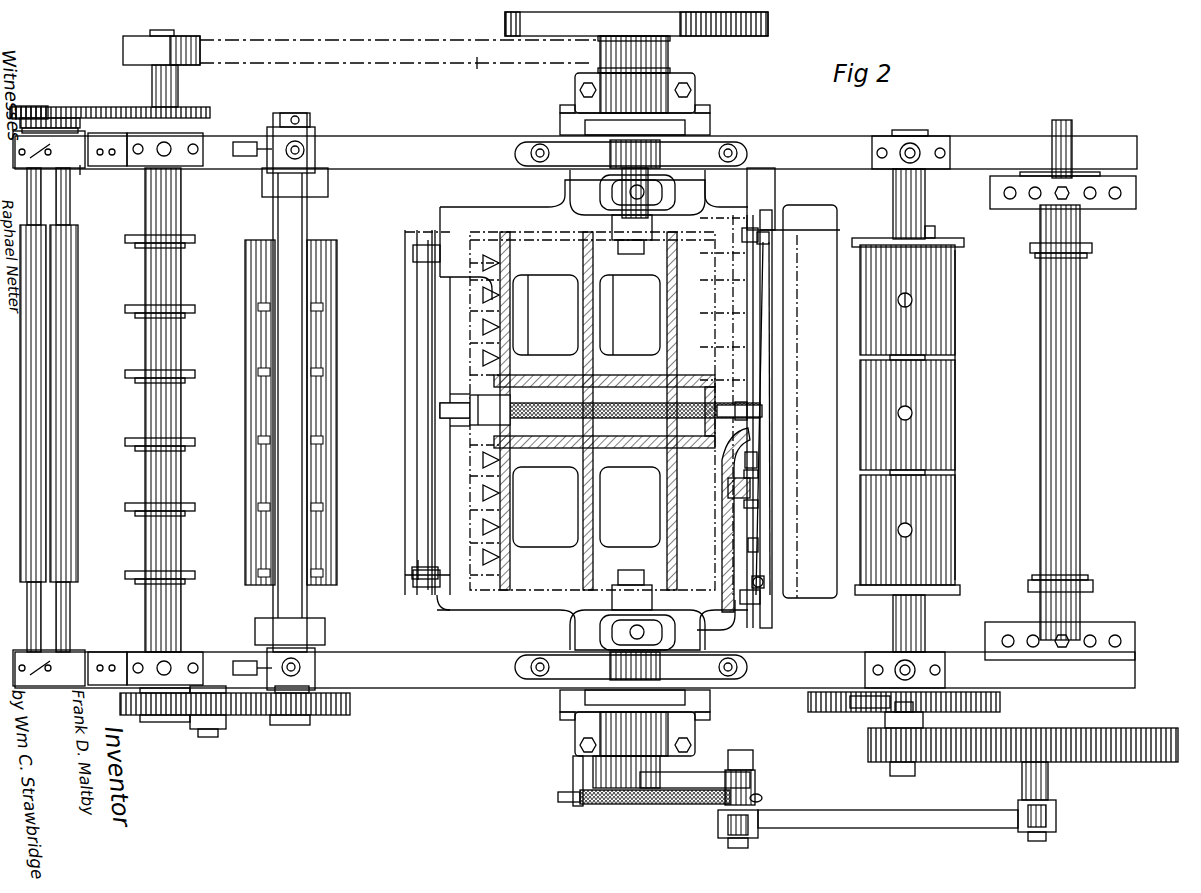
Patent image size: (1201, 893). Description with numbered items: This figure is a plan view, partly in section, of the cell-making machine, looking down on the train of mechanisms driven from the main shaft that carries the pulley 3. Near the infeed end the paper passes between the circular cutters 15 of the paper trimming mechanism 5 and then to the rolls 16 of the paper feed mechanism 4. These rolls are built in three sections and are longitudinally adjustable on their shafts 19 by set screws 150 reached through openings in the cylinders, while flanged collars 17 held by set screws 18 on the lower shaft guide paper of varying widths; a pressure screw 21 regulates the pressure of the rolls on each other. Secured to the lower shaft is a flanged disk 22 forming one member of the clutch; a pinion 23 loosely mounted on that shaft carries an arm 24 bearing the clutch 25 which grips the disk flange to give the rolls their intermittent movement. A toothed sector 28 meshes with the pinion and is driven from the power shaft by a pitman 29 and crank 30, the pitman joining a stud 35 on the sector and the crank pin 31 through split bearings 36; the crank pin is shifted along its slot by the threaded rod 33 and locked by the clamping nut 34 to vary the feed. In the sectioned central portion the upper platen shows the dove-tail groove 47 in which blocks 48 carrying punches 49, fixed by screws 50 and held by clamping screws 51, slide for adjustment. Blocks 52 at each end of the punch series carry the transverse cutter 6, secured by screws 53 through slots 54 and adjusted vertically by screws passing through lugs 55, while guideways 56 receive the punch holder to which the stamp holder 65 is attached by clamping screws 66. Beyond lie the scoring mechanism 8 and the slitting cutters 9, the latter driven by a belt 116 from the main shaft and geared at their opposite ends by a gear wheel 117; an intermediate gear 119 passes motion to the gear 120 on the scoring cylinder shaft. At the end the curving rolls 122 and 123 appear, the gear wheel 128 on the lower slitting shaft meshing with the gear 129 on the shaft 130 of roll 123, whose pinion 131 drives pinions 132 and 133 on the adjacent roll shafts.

The pulley 3 is at (768, 32).
The paper feed mechanism 4 is at (919, 415).
The paper trimming mechanism 5 is at (1060, 390).
The transverse cutter 6 is at (752, 545).
The scoring mechanism 8 is at (337, 425).
The slitting cutters 9 is at (190, 573).
The circular cutters 15 is at (1092, 248).
The rolls 16 is at (955, 318).
The flanged collars 17 is at (964, 242).
The set screws 18 is at (935, 232).
The shafts 19 is at (925, 197).
The pressure screw 21 is at (900, 160).
The flanged disk 22 is at (1000, 703).
The pinion 23 is at (915, 770).
The arm 24 is at (923, 720).
The clutch 25 is at (880, 708).
The toothed sector 28 is at (1152, 762).
The pitman 29 is at (838, 812).
The crank 30 is at (700, 772).
The crank pin 31 is at (763, 798).
The threaded rod 33 is at (662, 805).
The clamping nut 34 is at (752, 756).
The stud 35 is at (1048, 782).
The split bearings 36 is at (718, 832).
The dove-tail groove 47 is at (732, 628).
The blocks 48 is at (750, 485).
The punches 49 is at (757, 455).
The screws 50 is at (758, 470).
The clamping screws 51 is at (452, 330).
The blocks 52 is at (758, 222).
The screws 53 is at (764, 584).
The slots 54 is at (768, 245).
The lugs 55 is at (758, 545).
The guideways 56 is at (428, 585).
The stamp holder 65 is at (410, 498).
The clamping screws 66 is at (408, 576).
The belt 116 is at (487, 73).
The gear wheel 117 is at (128, 715).
The intermediate gear 119 is at (225, 722).
The gear 120 is at (340, 716).
The roll 122 is at (22, 450).
The roll 123 is at (78, 450).
The gear wheel 128 is at (210, 113).
The gear 129 is at (125, 112).
The shaft 130 is at (80, 192).
The pinion 131 is at (82, 124).
The pinion 132 is at (14, 106).
The pinion 133 is at (86, 145).
The set screws 150 is at (905, 305).